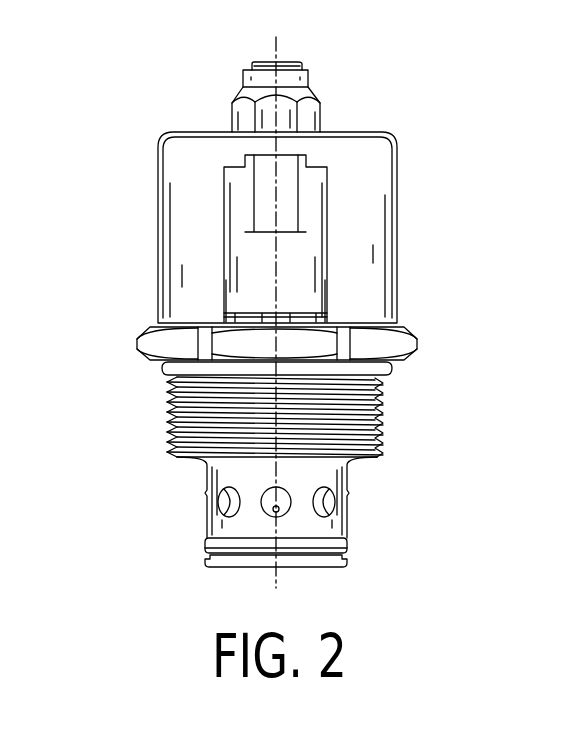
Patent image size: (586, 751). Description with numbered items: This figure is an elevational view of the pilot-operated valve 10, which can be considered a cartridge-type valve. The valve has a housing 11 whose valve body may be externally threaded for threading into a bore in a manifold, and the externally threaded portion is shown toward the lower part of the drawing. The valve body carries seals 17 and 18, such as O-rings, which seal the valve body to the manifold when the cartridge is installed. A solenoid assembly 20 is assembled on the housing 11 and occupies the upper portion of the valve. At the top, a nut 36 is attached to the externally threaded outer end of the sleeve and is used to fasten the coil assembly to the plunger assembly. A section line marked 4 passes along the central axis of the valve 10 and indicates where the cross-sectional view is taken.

The pilot-operated valve 10 is at (478, 171).
The section line 4- 4 is at (276, 37).
The nut 36 is at (322, 117).
The solenoid assembly 20 is at (146, 152).
The seal 17 is at (394, 368).
The housing 11 is at (157, 433).
The seal 18 is at (348, 548).